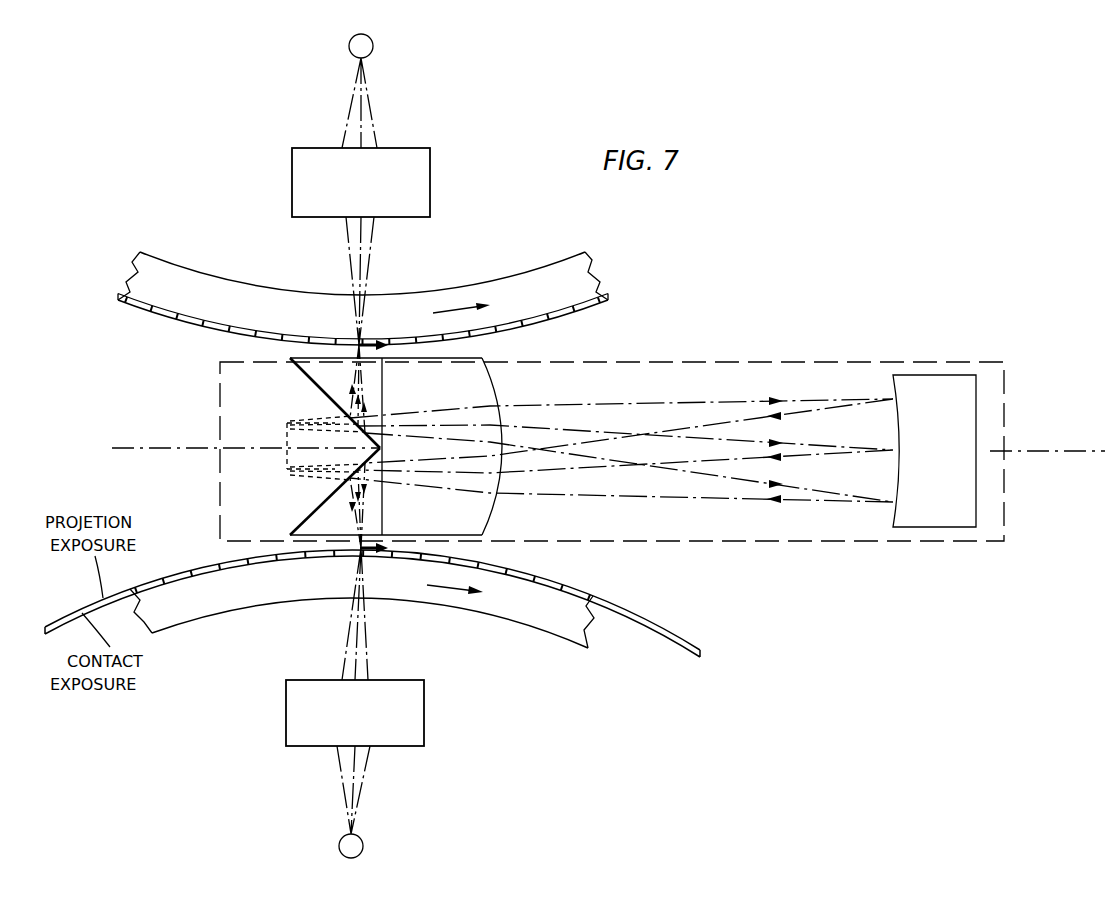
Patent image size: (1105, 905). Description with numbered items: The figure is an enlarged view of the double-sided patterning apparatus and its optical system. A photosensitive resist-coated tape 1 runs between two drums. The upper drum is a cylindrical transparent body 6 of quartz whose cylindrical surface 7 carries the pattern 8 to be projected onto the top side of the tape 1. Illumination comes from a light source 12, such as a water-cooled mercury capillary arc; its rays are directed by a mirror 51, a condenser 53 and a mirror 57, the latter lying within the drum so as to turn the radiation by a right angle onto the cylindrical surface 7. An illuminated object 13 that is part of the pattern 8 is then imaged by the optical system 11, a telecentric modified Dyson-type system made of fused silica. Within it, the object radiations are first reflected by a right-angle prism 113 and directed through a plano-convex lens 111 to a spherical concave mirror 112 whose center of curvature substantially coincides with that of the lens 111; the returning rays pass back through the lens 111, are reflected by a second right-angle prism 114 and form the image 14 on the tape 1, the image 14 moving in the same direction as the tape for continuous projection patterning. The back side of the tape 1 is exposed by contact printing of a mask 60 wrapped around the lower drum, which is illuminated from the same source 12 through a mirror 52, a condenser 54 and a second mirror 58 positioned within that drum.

The tape 1 is at (668, 631).
The cylindrical transparent body 6 is at (518, 278).
The cylindrical surface 7 is at (548, 318).
The pattern 8 is at (585, 305).
The optical system 11 is at (732, 360).
The light source 12 is at (373, 46).
The object 13 is at (363, 343).
The image 14 is at (362, 552).
The mask 60 is at (582, 594).
The plano-convex lens 111 is at (487, 392).
The spherical concave mirror 112 is at (944, 375).
The right-angle prism 113 is at (311, 379).
The right-angle prism 114 is at (318, 509).
The mirror 51 is at (361, 182).
The condenser 53 is at (361, 182).
The mirror 57 is at (361, 182).
The mirror 52 is at (355, 713).
The condenser 54 is at (355, 713).
The second mirror 58 is at (355, 713).